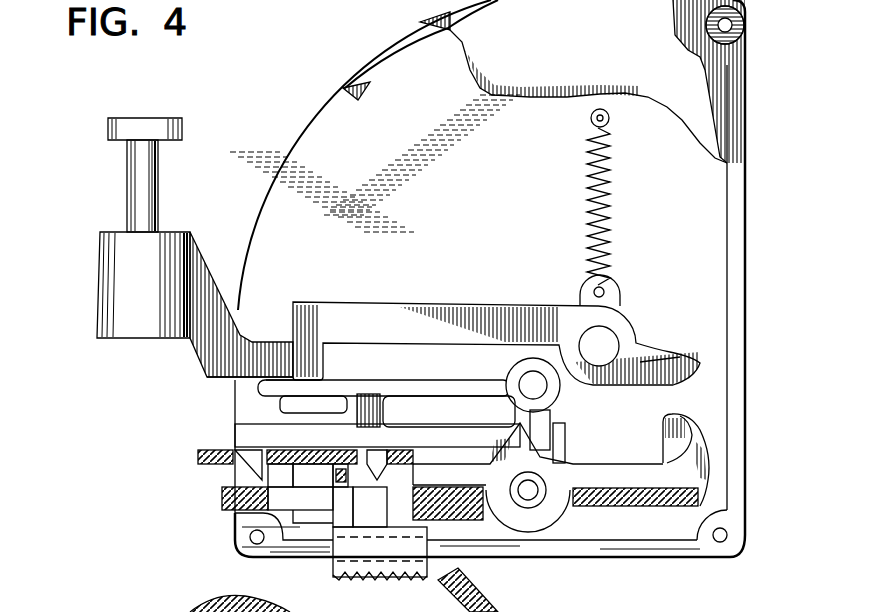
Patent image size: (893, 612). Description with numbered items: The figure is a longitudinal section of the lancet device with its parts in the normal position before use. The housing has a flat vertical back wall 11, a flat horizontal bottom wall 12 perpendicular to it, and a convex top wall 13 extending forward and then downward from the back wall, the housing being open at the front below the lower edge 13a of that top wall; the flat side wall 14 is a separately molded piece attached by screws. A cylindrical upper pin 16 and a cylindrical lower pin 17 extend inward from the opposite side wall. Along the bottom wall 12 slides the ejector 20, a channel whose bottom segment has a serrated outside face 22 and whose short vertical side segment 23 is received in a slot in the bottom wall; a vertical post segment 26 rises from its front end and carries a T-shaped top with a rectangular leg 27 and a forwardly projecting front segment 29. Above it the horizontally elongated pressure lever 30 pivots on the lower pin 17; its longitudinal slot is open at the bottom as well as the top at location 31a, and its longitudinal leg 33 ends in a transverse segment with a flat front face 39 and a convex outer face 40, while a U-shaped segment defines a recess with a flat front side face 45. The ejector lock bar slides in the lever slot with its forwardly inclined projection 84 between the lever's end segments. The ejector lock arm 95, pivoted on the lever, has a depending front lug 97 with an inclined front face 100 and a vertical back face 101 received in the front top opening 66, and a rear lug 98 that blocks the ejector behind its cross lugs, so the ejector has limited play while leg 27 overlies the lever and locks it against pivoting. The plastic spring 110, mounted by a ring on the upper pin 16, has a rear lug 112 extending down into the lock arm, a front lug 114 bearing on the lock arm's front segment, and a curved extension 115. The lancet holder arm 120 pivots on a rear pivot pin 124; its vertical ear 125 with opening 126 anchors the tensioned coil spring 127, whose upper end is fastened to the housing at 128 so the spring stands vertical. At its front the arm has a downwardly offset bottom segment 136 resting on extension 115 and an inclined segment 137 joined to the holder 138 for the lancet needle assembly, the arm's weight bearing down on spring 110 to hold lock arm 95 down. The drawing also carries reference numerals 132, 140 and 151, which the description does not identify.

The back wall 11 is at (740, 243).
The bottom wall 12 is at (618, 553).
The convex top wall 13 is at (378, 60).
The lower edge 13a is at (343, 97).
The side wall 14 is at (590, 55).
The upper pin 16 is at (530, 383).
The lower pin 17 is at (535, 490).
The ejector 20 is at (400, 567).
The serrated outside face 22 is at (357, 575).
The side segment 23 is at (343, 557).
The post segment 26 is at (345, 505).
The leg 27 is at (340, 480).
The front segment 29 is at (300, 493).
The pressure lever 30 is at (218, 505).
The bottom-open slot location 31a is at (528, 522).
The longitudinal leg 33 is at (633, 490).
The flat front face 39 is at (700, 452).
The convex outer face 40 is at (673, 415).
The front side face 45 is at (249, 590).
The front top opening 66 is at (243, 467).
The projection 84 is at (667, 433).
The ejector lock arm 95 is at (412, 415).
The front lug 97 is at (247, 467).
The rear lug 98 is at (378, 466).
The front face 100 is at (250, 468).
The back face 101 is at (280, 447).
The plastic spring 110 is at (447, 380).
The rear lug 112 is at (552, 418).
The front lug 114 is at (360, 407).
The extension 115 is at (273, 383).
The lancet holder arm 120 is at (370, 300).
The rear pivot pin 124 is at (603, 345).
The vertical ear 125 is at (580, 285).
The opening 126 is at (607, 285).
The coil spring 127 is at (608, 203).
The fastening point 128 is at (612, 118).
The lever tongue 132 is at (700, 368).
The bottom segment 136 is at (217, 380).
The inclined segment 137 is at (205, 352).
The holder 138 is at (97, 303).
The actuator knob 140 is at (157, 190).
The lower element 151 is at (195, 602).